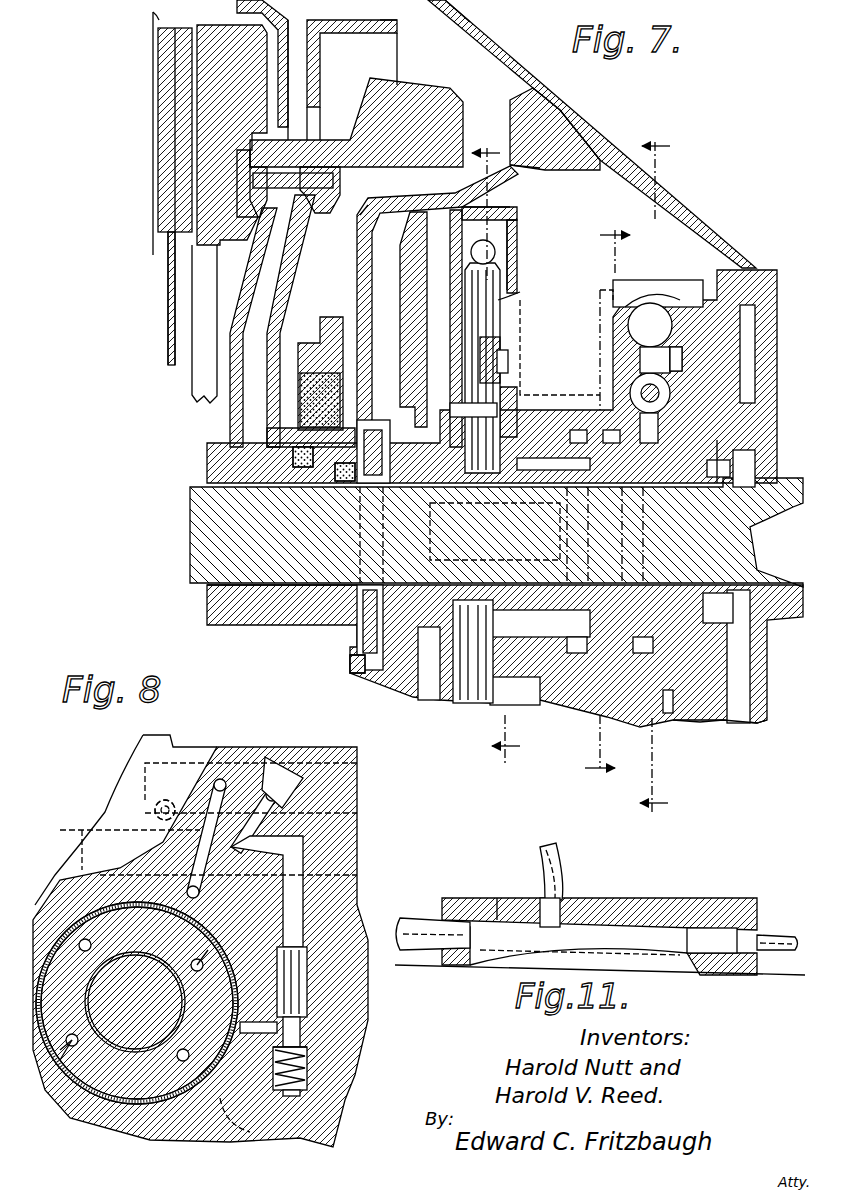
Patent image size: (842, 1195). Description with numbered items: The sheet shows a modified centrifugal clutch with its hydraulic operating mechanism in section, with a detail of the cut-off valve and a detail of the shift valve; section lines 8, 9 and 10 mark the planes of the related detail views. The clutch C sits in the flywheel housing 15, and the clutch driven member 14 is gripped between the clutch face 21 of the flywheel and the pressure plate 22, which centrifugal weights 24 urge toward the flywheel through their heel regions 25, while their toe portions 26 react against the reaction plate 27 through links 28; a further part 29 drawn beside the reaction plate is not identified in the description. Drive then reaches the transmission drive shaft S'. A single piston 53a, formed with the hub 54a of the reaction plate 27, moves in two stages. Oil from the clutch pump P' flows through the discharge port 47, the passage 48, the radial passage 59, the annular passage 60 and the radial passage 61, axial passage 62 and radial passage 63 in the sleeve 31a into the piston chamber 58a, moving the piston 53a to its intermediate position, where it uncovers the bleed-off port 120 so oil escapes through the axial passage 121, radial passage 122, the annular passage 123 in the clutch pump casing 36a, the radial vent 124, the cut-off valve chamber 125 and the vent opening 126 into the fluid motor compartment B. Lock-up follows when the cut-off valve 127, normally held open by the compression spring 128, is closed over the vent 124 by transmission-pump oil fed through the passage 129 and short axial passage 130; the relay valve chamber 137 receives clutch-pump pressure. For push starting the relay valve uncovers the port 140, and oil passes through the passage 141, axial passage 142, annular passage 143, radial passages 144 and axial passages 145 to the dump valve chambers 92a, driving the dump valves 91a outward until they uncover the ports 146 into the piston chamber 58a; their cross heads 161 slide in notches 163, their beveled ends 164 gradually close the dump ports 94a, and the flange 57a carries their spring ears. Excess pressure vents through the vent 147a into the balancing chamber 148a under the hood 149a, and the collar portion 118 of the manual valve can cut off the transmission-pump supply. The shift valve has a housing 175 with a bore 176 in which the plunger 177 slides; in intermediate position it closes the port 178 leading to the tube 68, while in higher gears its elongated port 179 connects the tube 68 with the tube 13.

In FIG. 7, the clutch C is at (692, 212).
In FIG. 7, the clutch pump P' is at (492, 356).
In FIG. 7, the transmission drive shaft S' is at (468, 532).
In FIG. 7, the section line 8— 8 is at (607, 500).
In FIG. 7, the section line 9— 9 is at (650, 475).
In FIG. 7, the section line 10— 10 is at (496, 446).
In FIG. 11, the tube 13 is at (778, 935).
In FIG. 7, the clutch driven member 14 is at (168, 95).
In FIG. 7, the flywheel housing 15 is at (480, 26).
In FIG. 7, the clutch face 21 is at (152, 42).
In FIG. 7, the pressure plate 22 is at (236, 6).
In FIG. 7, the centrifugal control elements or weights 24 is at (425, 96).
In FIG. 7, the heel regions 25 is at (262, 142).
In FIG. 7, the toe portions 26 is at (258, 240).
In FIG. 7, the reaction plate 27 is at (320, 58).
In FIG. 7, the links 28 is at (325, 196).
In FIG. 7, the bracket top 29 is at (397, 25).
In FIG. 7, the sleeve 31a is at (285, 612).
In FIG. 8, the sleeve 31a is at (130, 1080).
In FIG. 7, the clutch pump casing 36a is at (685, 726).
In FIG. 7, the pump discharge port 47 is at (682, 365).
In FIG. 7, the passage 48 is at (685, 352).
In FIG. 8, the passage 48 is at (155, 808).
In FIG. 7, the collar portion 118 is at (676, 359).
In FIG. 8, the collar portion 118 is at (165, 810).
In FIG. 7, the piston 53a is at (420, 332).
In FIG. 7, the hub of the reaction plate 54a is at (388, 418).
In FIG. 7, the flange 57a is at (532, 177).
In FIG. 7, the piston chamber 58a is at (505, 338).
In FIG. 7, the radial passage 59 is at (628, 368).
In FIG. 8, the radial passage 59 is at (156, 818).
In FIG. 7, the annular passage 60 is at (700, 440).
In FIG. 7, the radial passage 61 is at (722, 468).
In FIG. 8, the radial passage 61 is at (242, 1119).
In FIG. 7, the axial passage 62 is at (579, 535).
In FIG. 8, the axial passage 62 is at (58, 872).
In FIG. 7, the radial passage 63 is at (495, 531).
In FIG. 11, the tube 68 is at (560, 862).
In FIG. 7, the dump valves 91a is at (503, 330).
In FIG. 7, the dump valve chambers 92a is at (508, 215).
In FIG. 7, the dump ports 94a is at (506, 242).
In FIG. 7, the fluid motor compartment B is at (322, 332).
In FIG. 7, the annular bleed-off port 120 is at (372, 665).
In FIG. 7, the axial passage 121 is at (485, 565).
In FIG. 8, the axial passage 121 is at (60, 1155).
In FIG. 8, the radial passage 122 is at (48, 1115).
In FIG. 7, the annular passage 123 is at (600, 650).
In FIG. 8, the annular passage 123 is at (170, 1110).
In FIG. 8, the radial vent 124 is at (262, 1035).
In FIG. 8, the cut-off valve chamber 125 is at (305, 1080).
In FIG. 8, the vent opening 126 is at (300, 1095).
In FIG. 8, the cut-off valve 127 is at (300, 1000).
In FIG. 8, the compression spring 128 is at (305, 1060).
In FIG. 8, the passage 129 is at (300, 840).
In FIG. 8, the short axial passage 130 is at (280, 795).
In FIG. 8, the relay valve chamber 137 is at (145, 767).
In FIG. 7, the port 140 is at (640, 290).
In FIG. 8, the port 140 is at (222, 782).
In FIG. 7, the passage 141 is at (592, 345).
In FIG. 8, the passage 141 is at (185, 838).
In FIG. 7, the axial passage 142 is at (578, 428).
In FIG. 8, the axial passage 142 is at (140, 990).
In FIG. 7, the annular passage 143 is at (520, 640).
In FIG. 7, the radial passages 144 is at (608, 428).
In FIG. 7, the axial passages 145 is at (530, 456).
In FIG. 7, the ports 146 is at (500, 375).
In FIG. 7, the vent 147a is at (510, 360).
In FIG. 7, the balancing chamber 148a is at (425, 208).
In FIG. 7, the hood 149a is at (363, 210).
In FIG. 7, the cross head 161 is at (600, 300).
In FIG. 7, the notches 163 is at (500, 302).
In FIG. 7, the beveled outer ends 164 is at (497, 255).
In FIG. 11, the housing 175 is at (660, 900).
In FIG. 11, the bore 176 is at (710, 928).
In FIG. 11, the valve plunger 177 is at (418, 918).
In FIG. 11, the port 178 is at (572, 900).
In FIG. 11, the elongated port 179 is at (497, 897).